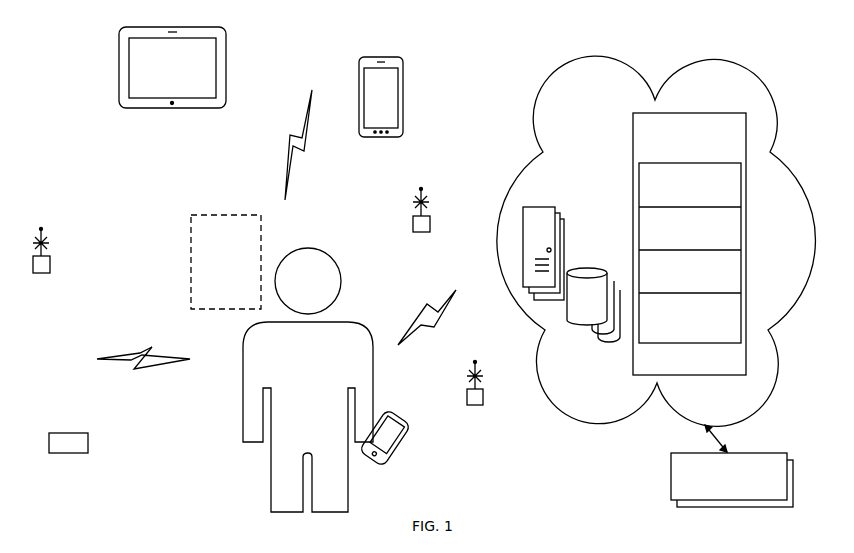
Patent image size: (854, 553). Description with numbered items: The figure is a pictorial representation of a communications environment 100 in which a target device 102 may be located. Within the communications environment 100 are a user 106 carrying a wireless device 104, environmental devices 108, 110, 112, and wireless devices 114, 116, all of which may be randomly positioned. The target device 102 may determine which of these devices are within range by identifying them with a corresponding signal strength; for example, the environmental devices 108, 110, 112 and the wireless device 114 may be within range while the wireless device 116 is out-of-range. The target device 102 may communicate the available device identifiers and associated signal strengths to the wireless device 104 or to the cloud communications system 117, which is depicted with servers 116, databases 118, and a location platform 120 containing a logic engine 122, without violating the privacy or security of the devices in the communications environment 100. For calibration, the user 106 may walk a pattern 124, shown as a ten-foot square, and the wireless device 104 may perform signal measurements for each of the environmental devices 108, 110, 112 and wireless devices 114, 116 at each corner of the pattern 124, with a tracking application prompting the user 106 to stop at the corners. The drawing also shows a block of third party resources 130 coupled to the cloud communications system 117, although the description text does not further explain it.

The communications environment 100 is at (44, 27).
The target device 102 is at (90, 442).
The wireless device 104 is at (396, 458).
The user 106 is at (318, 366).
The environmental device 108 is at (52, 266).
The environmental device 110 is at (432, 224).
The environmental device 112 is at (485, 397).
The wireless device 114 is at (405, 90).
The wireless device 116 is at (227, 58).
The cloud communications system 117 is at (548, 130).
The databases 118 is at (603, 129).
The location platform 120 is at (700, 156).
The logic engine 122 is at (700, 198).
The pattern 124 is at (263, 218).
The third party resources 130 is at (788, 488).